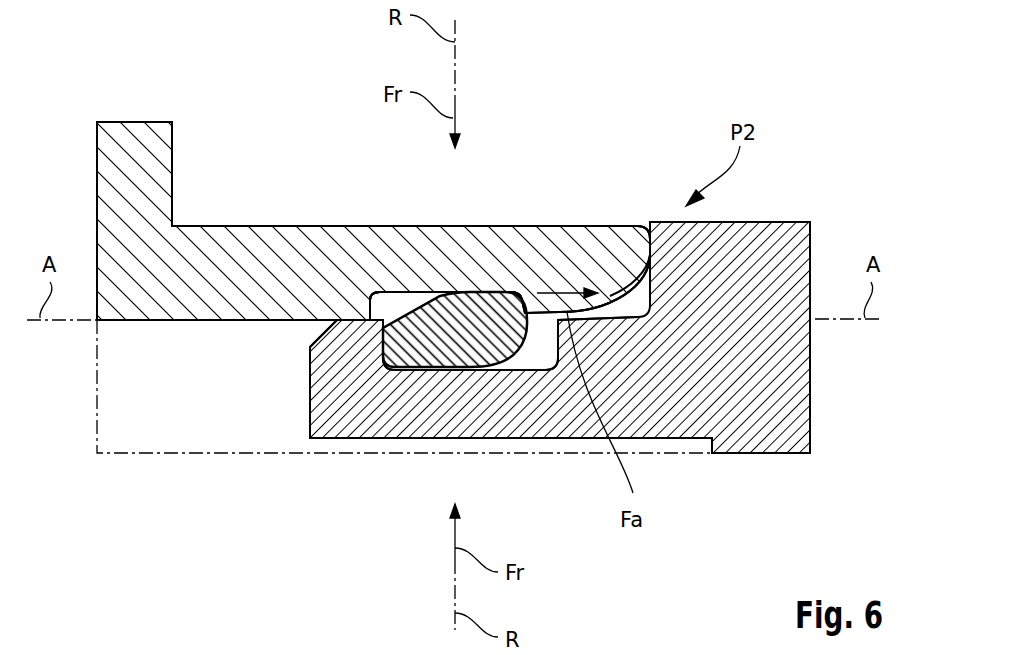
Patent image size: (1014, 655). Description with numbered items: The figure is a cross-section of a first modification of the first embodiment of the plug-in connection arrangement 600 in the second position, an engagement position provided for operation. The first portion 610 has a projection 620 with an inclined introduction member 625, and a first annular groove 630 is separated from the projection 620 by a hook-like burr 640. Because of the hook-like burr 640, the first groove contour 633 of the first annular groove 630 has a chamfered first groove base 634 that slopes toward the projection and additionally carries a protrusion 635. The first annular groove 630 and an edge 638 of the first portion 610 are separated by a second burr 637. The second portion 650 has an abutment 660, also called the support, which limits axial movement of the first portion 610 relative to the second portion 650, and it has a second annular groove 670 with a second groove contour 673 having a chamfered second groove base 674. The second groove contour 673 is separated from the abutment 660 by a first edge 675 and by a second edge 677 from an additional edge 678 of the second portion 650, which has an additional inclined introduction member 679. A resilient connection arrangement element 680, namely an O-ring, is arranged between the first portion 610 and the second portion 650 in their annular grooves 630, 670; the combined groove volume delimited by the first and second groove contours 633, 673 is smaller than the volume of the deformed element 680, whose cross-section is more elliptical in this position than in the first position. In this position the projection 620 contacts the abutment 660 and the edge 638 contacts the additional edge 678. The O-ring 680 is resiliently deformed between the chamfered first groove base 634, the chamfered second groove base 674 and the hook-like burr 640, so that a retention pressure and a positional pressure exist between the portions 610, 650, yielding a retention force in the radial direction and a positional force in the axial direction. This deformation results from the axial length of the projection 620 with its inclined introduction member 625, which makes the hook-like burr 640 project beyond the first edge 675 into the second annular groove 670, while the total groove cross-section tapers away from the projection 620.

The plug-in connection arrangement 600 is at (800, 138).
The first portion 610 is at (212, 253).
The projection 620 is at (637, 240).
The inclined introduction member 625 is at (628, 270).
The first annular groove 630 is at (384, 300).
The first groove contour 633 is at (516, 290).
The chamfered first groove base 634 is at (490, 288).
The protrusion 635 is at (430, 290).
The second burr 637 is at (360, 317).
The edge 638 is at (275, 317).
The hook-like burr 640 is at (612, 293).
The second portion 650 is at (783, 243).
The abutment 660 is at (653, 289).
The second annular groove 670 is at (535, 357).
The second groove contour 673 is at (510, 372).
The chamfered second groove base 674 is at (467, 372).
The first edge 675 is at (560, 320).
The second edge 677 is at (376, 345).
The additional edge 678 is at (312, 366).
The additional inclined introduction member 679 is at (313, 345).
The resilient connection arrangement element 680 is at (423, 340).